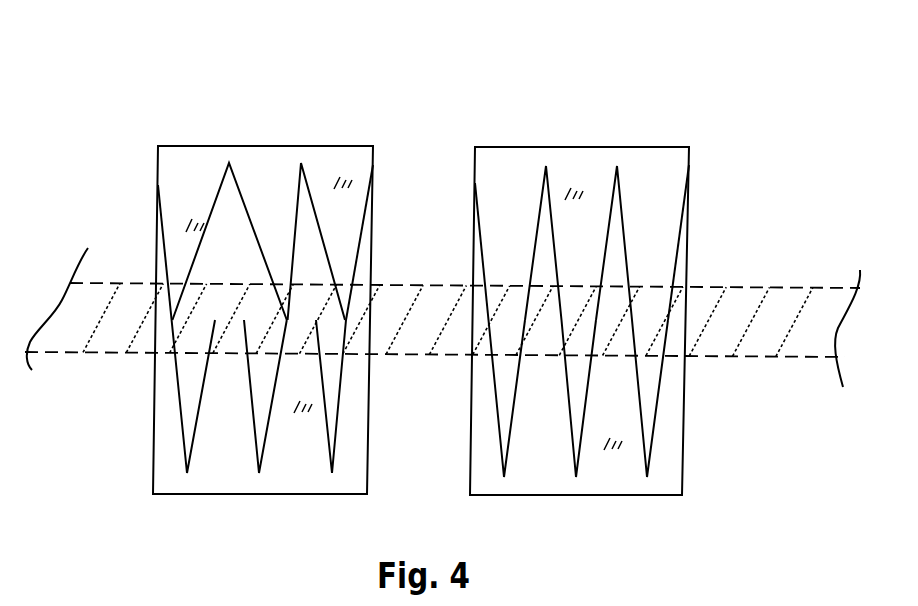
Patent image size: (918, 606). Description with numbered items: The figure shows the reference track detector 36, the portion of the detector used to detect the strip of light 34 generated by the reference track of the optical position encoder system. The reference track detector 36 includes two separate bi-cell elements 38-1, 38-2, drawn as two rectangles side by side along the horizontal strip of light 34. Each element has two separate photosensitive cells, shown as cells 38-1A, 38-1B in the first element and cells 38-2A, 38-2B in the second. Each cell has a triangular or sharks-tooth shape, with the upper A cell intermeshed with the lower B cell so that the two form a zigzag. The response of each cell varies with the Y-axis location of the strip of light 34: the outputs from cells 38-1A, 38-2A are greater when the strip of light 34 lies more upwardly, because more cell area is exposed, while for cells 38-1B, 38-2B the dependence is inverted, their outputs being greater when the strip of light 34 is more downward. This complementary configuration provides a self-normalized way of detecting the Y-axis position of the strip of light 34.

The reference track detector 36 is at (442, 260).
The strip of light 34 is at (442, 307).
The first bi-cell element 38-1 is at (285, 290).
The second bi-cell element 38-2 is at (607, 291).
The photosensitive cell A of first bi-cell element 38-1A is at (265, 241).
The photosensitive cell B of first bi-cell element 38-1B is at (259, 396).
The photosensitive cell A of second bi-cell element 38-2A is at (582, 242).
The photosensitive cell B of second bi-cell element 38-2B is at (579, 398).